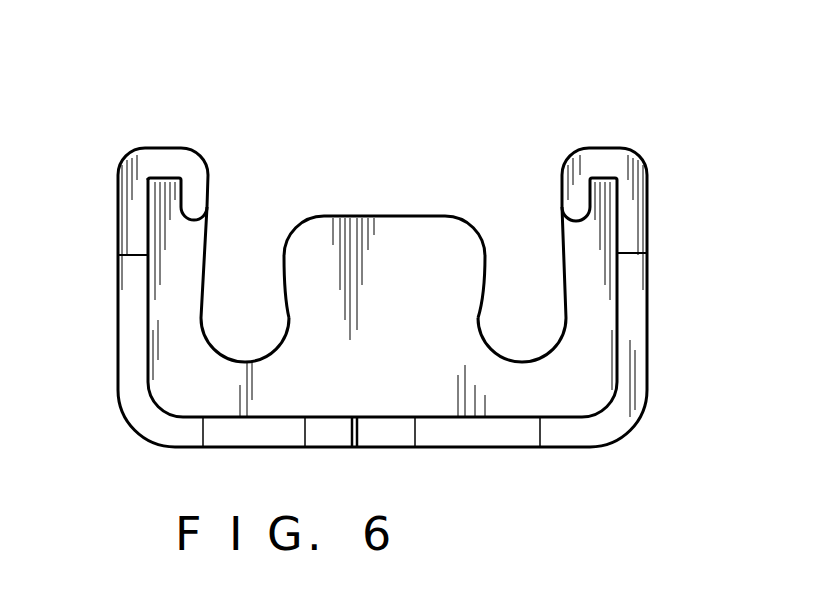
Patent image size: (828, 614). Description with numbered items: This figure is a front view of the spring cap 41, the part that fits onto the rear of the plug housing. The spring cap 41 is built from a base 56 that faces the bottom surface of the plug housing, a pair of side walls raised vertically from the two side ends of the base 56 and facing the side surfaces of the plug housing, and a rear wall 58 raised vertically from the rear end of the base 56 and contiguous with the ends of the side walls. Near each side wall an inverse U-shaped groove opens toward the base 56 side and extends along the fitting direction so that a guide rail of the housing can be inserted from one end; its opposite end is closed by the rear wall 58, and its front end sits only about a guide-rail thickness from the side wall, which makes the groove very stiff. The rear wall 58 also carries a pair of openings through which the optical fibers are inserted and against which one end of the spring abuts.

The spring cap 41 is at (200, 103).
The base 56 is at (470, 433).
The rear wall 58 is at (393, 216).